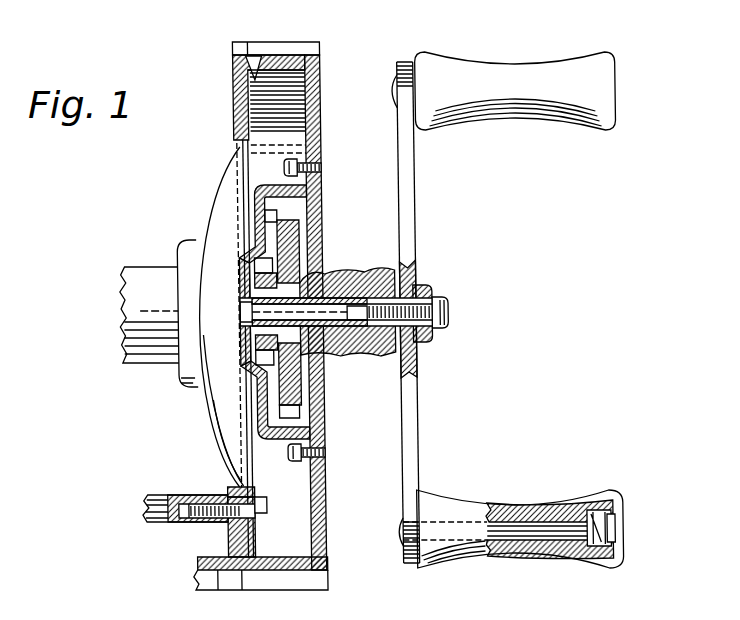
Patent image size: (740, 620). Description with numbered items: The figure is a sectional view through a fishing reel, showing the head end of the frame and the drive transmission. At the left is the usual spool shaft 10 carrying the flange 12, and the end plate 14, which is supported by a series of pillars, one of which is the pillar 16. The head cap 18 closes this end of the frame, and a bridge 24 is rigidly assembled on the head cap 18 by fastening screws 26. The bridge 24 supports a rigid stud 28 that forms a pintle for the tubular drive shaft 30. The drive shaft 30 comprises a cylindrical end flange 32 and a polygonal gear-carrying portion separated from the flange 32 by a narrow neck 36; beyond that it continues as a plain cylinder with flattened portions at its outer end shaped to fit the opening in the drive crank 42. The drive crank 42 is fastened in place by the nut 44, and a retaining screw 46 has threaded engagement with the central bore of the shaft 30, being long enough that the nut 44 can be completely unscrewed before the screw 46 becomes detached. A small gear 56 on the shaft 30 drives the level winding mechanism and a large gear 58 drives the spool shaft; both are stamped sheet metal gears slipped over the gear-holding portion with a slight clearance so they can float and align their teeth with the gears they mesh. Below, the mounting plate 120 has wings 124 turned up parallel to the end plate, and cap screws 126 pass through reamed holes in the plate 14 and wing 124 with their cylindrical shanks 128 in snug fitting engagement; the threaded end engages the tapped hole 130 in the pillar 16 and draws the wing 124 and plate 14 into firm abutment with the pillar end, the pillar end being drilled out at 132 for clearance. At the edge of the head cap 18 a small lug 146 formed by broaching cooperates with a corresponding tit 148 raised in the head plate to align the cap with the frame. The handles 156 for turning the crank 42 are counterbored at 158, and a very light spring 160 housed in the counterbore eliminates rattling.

The spool shaft 10 is at (140, 311).
The flange 12 is at (219, 190).
The end plate 14 is at (243, 110).
The pillar 16 is at (152, 503).
The head cap 18 is at (315, 80).
The bridge 24 is at (314, 192).
The fastening screws 26 is at (320, 168).
The stud 28 is at (263, 313).
The drive shaft 30 is at (348, 297).
The cylindrical end flange 32 is at (240, 330).
The neck 36 is at (243, 343).
The drive crank 42 is at (416, 270).
The nut 44 is at (423, 292).
The retaining screw 46 is at (430, 333).
The small gear 56 is at (243, 277).
The large gear 58 is at (291, 247).
The mounting plate 120 is at (214, 590).
The wing 124 is at (253, 540).
The cap screw 126 is at (254, 510).
The cylindrical shank 128 is at (224, 500).
The tapped hole 130 is at (174, 528).
The drilled clearance 132 is at (213, 528).
The lug 146 is at (263, 80).
The tit 148 is at (252, 72).
The handle 156 is at (525, 505).
The counterbore 158 is at (590, 505).
The spring 160 is at (612, 530).